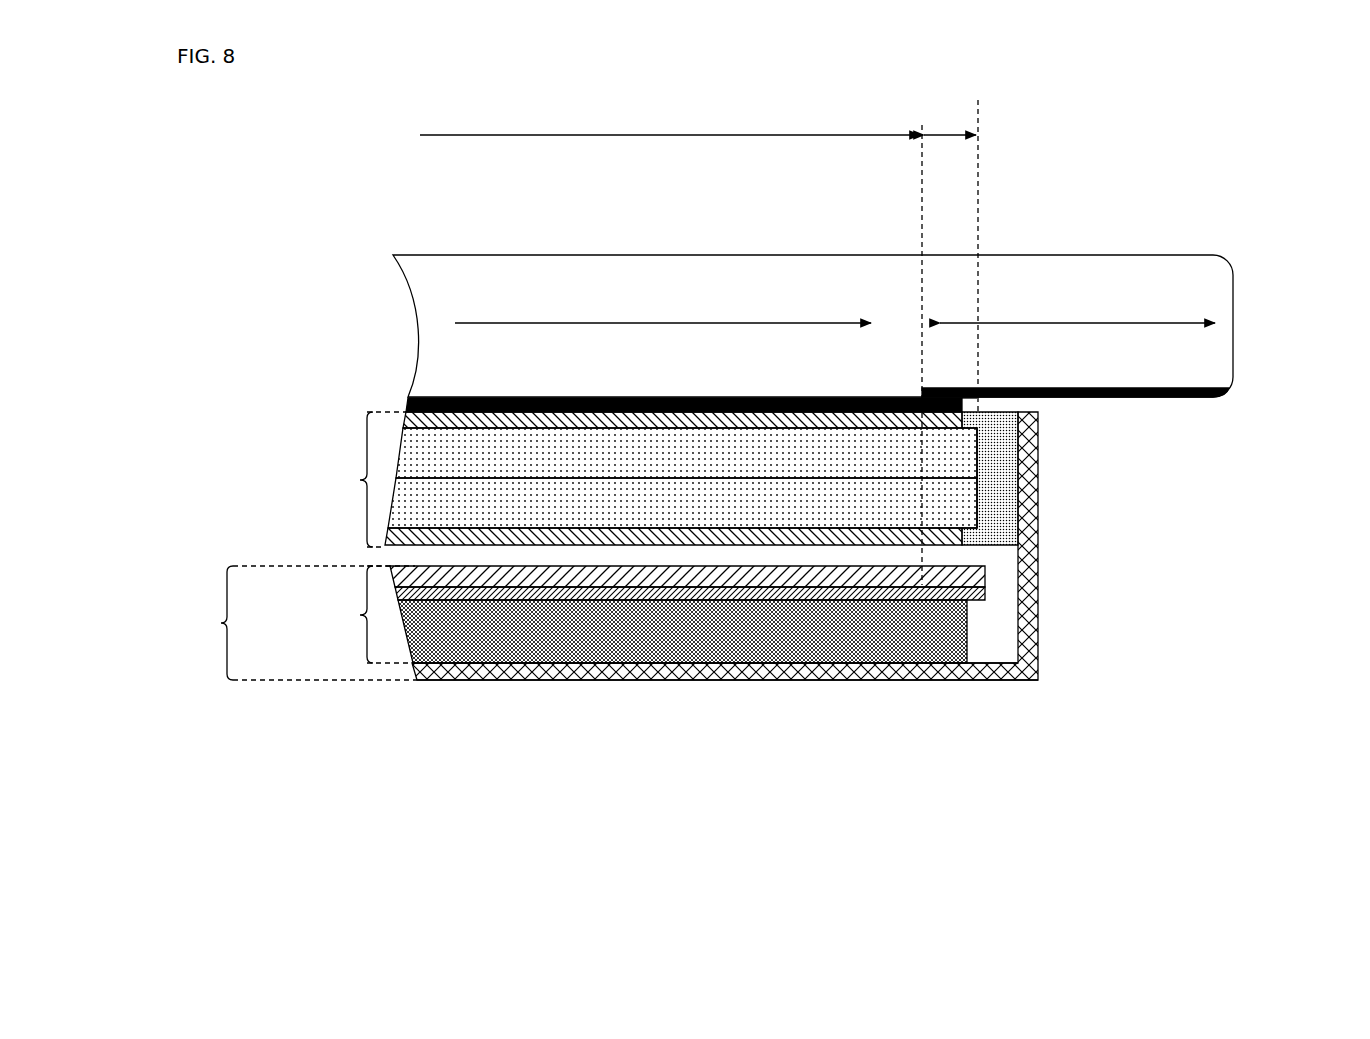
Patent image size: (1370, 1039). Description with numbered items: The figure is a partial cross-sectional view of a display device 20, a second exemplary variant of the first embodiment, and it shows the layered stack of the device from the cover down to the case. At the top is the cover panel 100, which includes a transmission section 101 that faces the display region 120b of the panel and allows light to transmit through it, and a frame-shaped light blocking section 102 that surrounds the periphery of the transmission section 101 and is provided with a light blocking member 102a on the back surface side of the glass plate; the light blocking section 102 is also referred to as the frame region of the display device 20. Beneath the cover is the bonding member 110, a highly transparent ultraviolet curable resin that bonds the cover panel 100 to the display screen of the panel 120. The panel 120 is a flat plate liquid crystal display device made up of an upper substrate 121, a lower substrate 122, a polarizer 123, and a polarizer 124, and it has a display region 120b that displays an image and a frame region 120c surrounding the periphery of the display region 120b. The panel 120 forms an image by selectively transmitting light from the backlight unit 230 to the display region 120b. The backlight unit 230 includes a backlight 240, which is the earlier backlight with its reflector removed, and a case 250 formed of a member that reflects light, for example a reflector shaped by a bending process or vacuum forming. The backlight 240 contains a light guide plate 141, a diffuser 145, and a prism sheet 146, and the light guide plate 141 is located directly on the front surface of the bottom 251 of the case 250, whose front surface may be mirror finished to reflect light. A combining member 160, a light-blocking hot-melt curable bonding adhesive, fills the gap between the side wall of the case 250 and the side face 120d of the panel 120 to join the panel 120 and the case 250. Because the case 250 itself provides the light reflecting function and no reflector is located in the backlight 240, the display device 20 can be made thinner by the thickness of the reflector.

The display device 20 is at (836, 73).
The cover panel 100 is at (405, 255).
The transmission section 101 is at (613, 323).
The light blocking section 102 is at (1040, 323).
The light blocking member 102a is at (1178, 388).
The bonding member 110 is at (537, 398).
The panel 120 is at (771, 496).
The display region 120b is at (535, 135).
The frame region 120c is at (945, 135).
The side face 120d is at (977, 470).
The upper substrate 121 is at (950, 450).
The lower substrate 122 is at (952, 505).
The polarizer 123 is at (1020, 416).
The polarizer 124 is at (962, 535).
The light guide plate 141 is at (660, 628).
The diffuser 145 is at (545, 598).
The prism sheet 146 is at (467, 573).
The combining member 160 is at (987, 542).
The backlight unit 230 is at (590, 618).
The backlight 240 is at (611, 695).
The case 250 is at (835, 680).
The bottom 251 is at (945, 680).